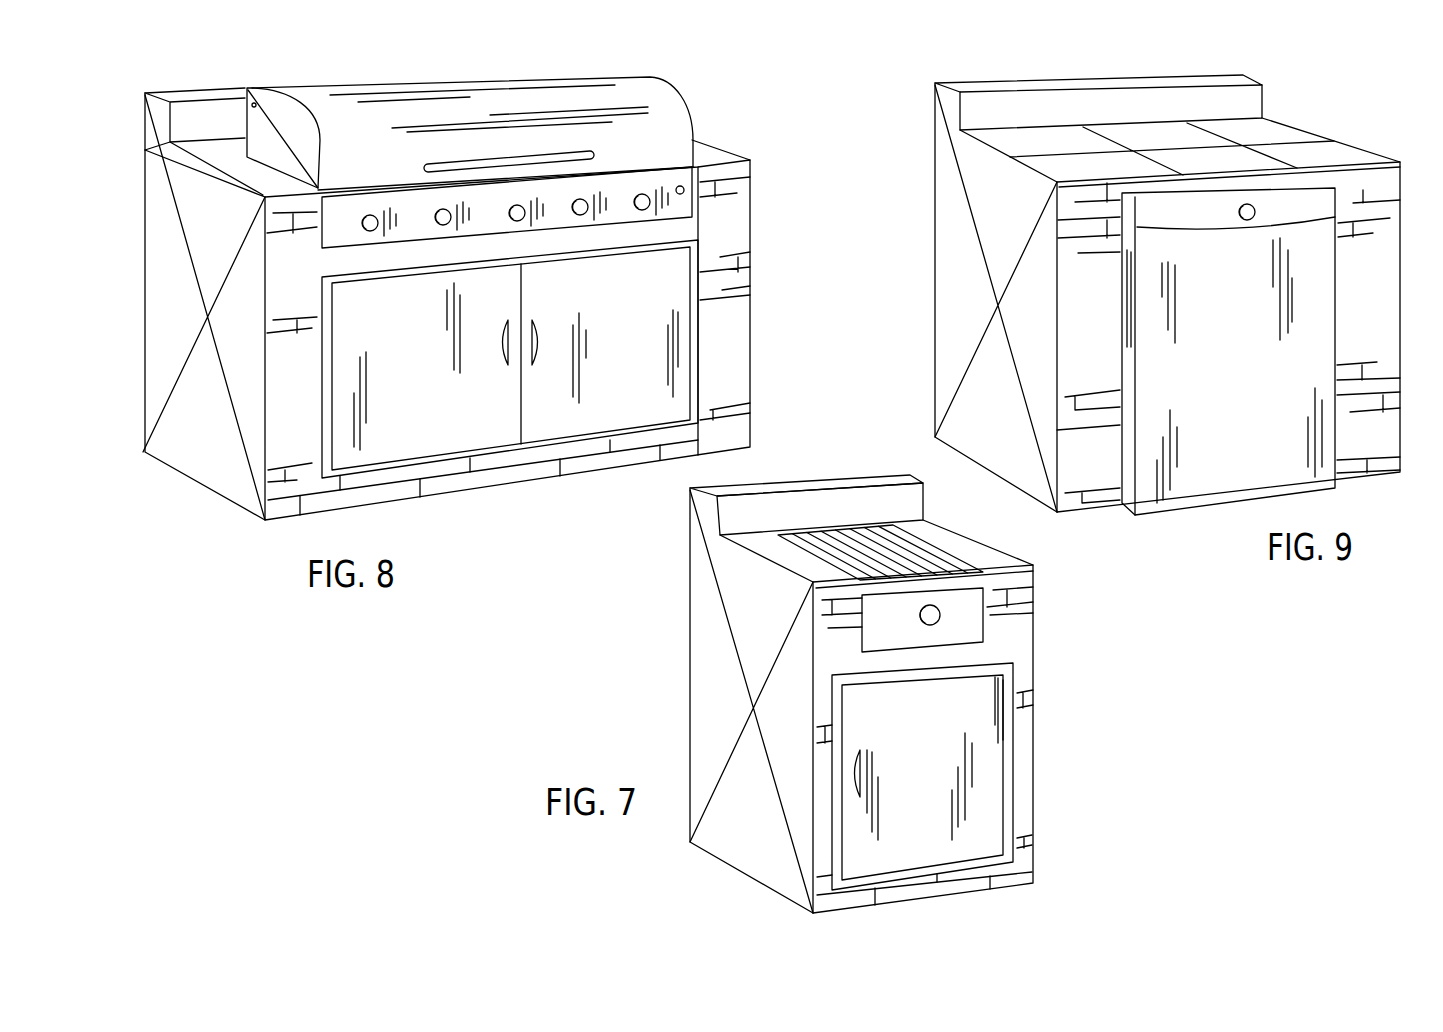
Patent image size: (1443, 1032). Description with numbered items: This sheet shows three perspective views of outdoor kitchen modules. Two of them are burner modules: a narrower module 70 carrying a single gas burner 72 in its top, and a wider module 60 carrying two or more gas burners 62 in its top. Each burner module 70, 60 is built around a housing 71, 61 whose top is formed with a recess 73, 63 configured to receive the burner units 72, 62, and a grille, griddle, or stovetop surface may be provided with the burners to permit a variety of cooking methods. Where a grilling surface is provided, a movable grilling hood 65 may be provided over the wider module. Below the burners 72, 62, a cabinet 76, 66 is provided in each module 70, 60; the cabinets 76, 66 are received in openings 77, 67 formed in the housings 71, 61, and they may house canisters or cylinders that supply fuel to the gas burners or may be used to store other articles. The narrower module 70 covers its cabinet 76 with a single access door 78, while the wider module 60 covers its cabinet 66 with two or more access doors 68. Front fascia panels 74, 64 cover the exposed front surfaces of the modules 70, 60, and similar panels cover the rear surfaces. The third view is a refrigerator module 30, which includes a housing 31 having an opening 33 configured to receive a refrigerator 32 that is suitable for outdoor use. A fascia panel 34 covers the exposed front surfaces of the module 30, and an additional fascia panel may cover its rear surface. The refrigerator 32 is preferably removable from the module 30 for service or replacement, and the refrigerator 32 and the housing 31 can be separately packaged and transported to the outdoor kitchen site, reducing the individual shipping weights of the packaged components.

In FIG. 8, the module 60 is at (710, 123).
In FIG. 8, the housing 61 is at (176, 140).
In FIG. 8, the gas burners 62 is at (680, 176).
In FIG. 8, the recess 63 is at (717, 229).
In FIG. 8, the front fascia panel 64 is at (730, 277).
In FIG. 8, the movable grilling hood 65 is at (650, 97).
In FIG. 8, the cabinet 66 is at (577, 428).
In FIG. 8, the opening 67 is at (442, 468).
In FIG. 8, the access doors 68 is at (520, 342).
In FIG. 7, the module 70 is at (883, 462).
In FIG. 7, the housing 71 is at (688, 621).
In FIG. 7, the gas burner 72 is at (967, 622).
In FIG. 7, the recess 73 is at (980, 645).
In FIG. 7, the front fascia panel 74 is at (1020, 592).
In FIG. 7, the cabinet 76 is at (982, 745).
In FIG. 7, the opening 77 is at (1037, 825).
In FIG. 7, the access door 78 is at (858, 773).
In FIG. 9, the refrigerator module 30 is at (1295, 119).
In FIG. 9, the housing 31 is at (933, 188).
In FIG. 9, the refrigerator 32 is at (1254, 386).
In FIG. 9, the opening 33 is at (1118, 453).
In FIG. 9, the fascia panel 34 is at (1392, 413).